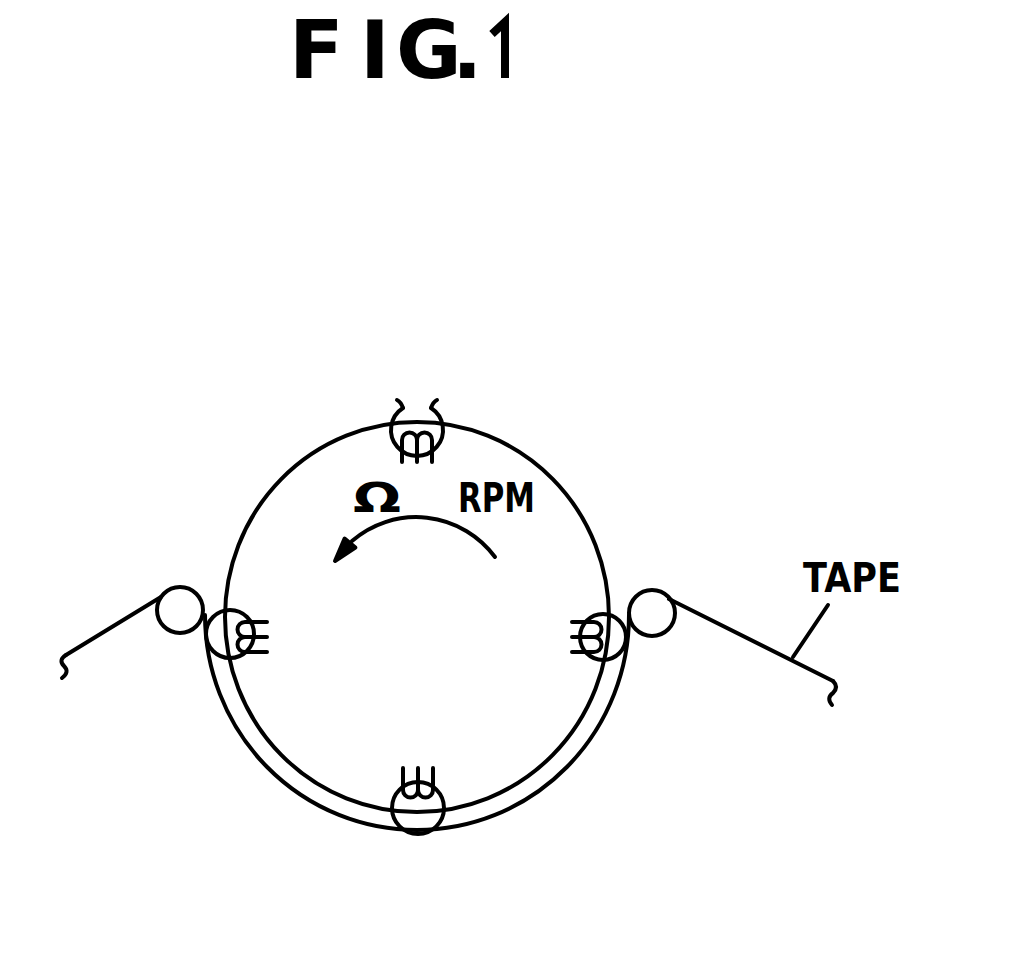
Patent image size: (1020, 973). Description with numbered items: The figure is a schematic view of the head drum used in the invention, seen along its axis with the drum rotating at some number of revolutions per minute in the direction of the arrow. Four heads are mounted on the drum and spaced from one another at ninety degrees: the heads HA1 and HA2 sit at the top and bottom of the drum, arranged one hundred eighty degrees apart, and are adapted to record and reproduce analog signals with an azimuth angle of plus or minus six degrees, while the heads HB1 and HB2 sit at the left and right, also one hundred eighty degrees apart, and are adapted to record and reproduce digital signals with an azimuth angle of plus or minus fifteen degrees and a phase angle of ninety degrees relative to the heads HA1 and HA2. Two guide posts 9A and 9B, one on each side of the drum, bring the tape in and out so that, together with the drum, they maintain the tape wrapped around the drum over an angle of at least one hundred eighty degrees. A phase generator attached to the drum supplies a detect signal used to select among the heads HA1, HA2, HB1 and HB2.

The guide post 9A is at (176, 600).
The guide post 9B is at (657, 602).
The head HA1 is at (357, 342).
The head HA2 is at (365, 772).
The head HB1 is at (280, 692).
The head HB2 is at (558, 687).